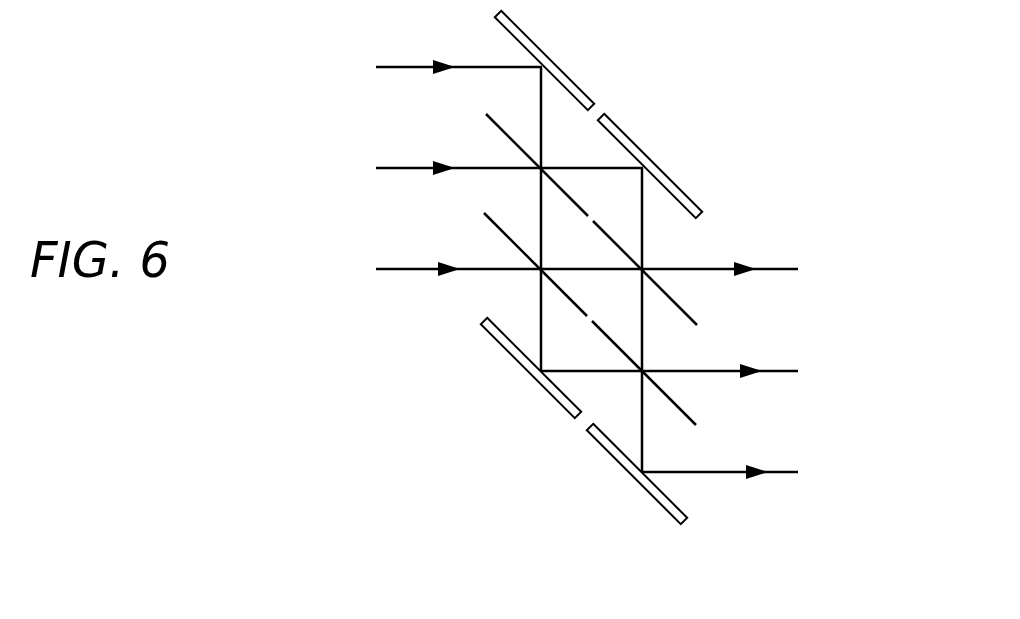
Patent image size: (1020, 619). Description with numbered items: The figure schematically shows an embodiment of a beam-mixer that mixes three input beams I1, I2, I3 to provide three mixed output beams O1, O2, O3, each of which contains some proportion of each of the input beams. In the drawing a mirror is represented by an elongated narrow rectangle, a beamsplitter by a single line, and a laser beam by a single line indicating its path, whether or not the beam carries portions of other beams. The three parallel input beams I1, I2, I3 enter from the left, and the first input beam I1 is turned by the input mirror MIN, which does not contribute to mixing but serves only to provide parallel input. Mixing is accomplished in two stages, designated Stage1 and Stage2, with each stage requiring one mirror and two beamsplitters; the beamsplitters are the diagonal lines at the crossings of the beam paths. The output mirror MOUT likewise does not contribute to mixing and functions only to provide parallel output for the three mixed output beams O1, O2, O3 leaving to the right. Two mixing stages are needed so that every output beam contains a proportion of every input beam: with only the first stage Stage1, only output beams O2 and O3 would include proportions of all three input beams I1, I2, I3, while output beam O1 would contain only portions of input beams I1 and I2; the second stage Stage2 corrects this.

The input beam I1 is at (459, 53).
The input beam I2 is at (509, 154).
The input beam I3 is at (509, 254).
The output beam O1 is at (721, 254).
The output beam O2 is at (671, 356).
The output beam O3 is at (721, 457).
The input mirror MIN is at (573, 82).
The output mirror MOUT is at (678, 508).
The first mixing stage Stage1 is at (541, 387).
The second mixing stage Stage2 is at (642, 490).